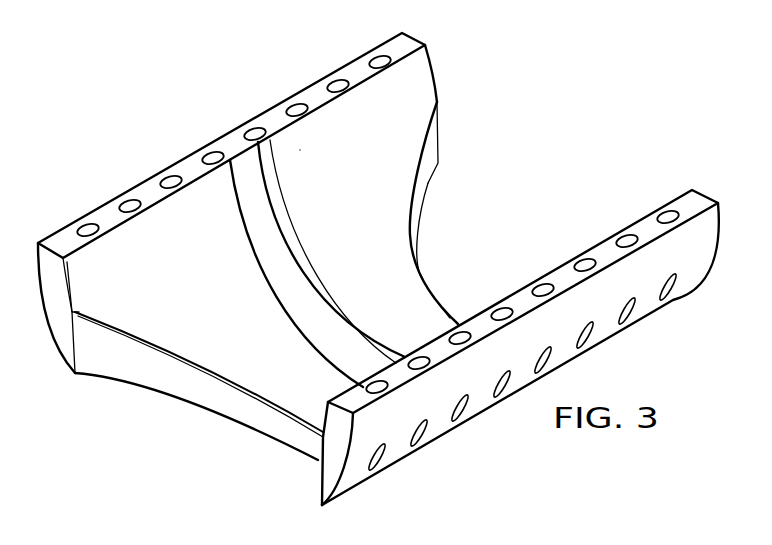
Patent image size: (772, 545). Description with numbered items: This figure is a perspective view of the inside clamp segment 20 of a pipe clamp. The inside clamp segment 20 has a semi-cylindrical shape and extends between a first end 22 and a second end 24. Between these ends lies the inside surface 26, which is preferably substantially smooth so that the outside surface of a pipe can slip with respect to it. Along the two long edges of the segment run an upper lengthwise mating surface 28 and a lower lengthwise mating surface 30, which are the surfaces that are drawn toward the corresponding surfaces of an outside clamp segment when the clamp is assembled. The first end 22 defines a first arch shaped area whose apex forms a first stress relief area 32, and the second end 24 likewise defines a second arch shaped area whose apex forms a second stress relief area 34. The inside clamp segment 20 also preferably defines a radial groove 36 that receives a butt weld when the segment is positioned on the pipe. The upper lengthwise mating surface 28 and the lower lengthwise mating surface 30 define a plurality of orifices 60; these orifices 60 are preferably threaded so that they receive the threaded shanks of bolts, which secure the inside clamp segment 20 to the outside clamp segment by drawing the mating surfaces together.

The inside clamp segment 20 is at (188, 77).
The first end 22 is at (177, 432).
The second end 24 is at (522, 205).
The inside surface 26 is at (372, 222).
The upper lengthwise mating surface 28 is at (700, 202).
The lower lengthwise mating surface 30 is at (357, 70).
The first stress relief area 32 is at (278, 432).
The second stress relief area 34 is at (442, 307).
The radial groove 36 is at (352, 347).
The orifices 60 is at (132, 200).